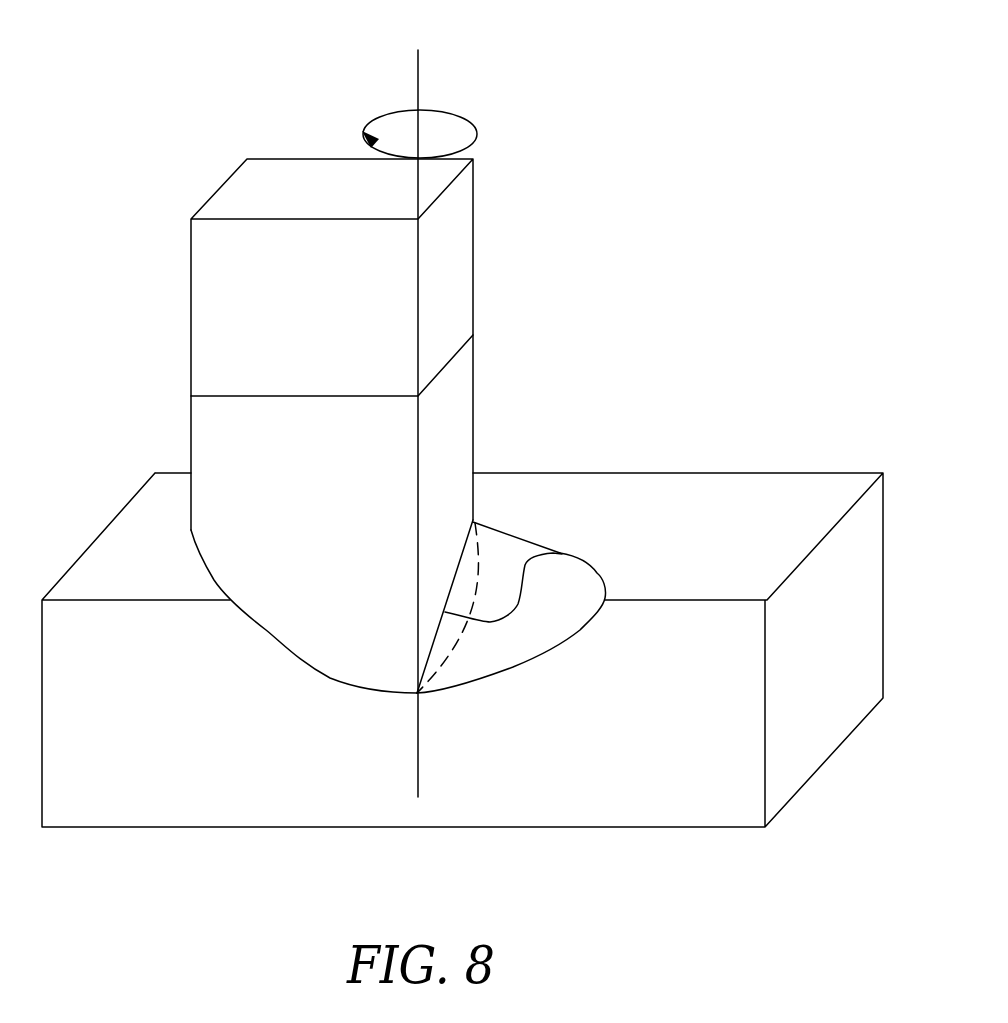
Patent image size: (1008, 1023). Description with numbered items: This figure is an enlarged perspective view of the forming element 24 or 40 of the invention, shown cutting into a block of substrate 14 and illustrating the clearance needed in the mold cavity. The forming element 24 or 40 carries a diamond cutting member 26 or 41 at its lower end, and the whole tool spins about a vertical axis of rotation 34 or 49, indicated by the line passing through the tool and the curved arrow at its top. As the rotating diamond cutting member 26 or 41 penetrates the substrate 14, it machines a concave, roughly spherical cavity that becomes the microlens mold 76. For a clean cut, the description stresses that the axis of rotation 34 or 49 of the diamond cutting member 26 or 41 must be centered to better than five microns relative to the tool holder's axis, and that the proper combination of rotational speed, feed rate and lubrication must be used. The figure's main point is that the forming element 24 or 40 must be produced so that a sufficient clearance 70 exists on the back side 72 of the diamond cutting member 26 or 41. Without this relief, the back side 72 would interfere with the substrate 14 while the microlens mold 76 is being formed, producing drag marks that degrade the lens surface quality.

The substrate 14 is at (678, 502).
The forming element 24 is at (440, 277).
The forming element 40 is at (473, 240).
The diamond cutting member 26 is at (440, 514).
The diamond cutting member 41 is at (473, 407).
The axis of rotation 34 is at (499, 406).
The axis of rotation 49 is at (422, 73).
The clearance 70 is at (483, 530).
The back side 72 is at (561, 554).
The microlens mold 76 is at (522, 637).